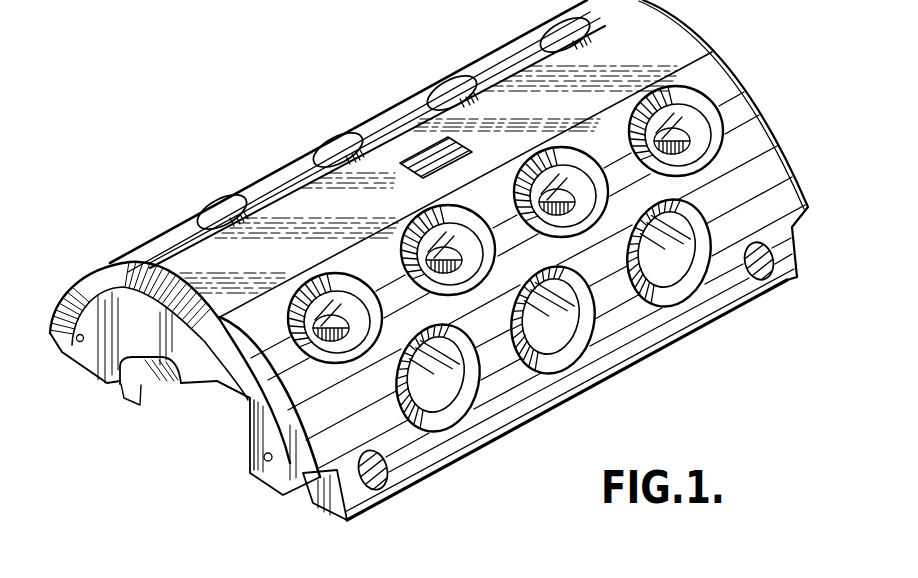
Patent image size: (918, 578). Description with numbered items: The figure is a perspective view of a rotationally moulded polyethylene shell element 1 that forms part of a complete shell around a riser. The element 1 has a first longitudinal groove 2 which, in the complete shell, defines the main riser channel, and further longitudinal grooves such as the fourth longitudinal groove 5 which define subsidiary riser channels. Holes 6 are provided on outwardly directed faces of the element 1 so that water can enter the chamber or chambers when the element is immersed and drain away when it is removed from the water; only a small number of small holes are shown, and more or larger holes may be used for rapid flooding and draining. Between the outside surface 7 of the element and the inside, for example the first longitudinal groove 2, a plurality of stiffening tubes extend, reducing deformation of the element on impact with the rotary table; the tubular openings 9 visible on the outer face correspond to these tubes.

The shell element 1 is at (640, 383).
The first longitudinal groove 2 is at (170, 410).
The fourth longitudinal groove 5 is at (240, 397).
The holes 6 is at (383, 487).
The outside surface 7 is at (367, 133).
The boss opening 9 is at (690, 143).